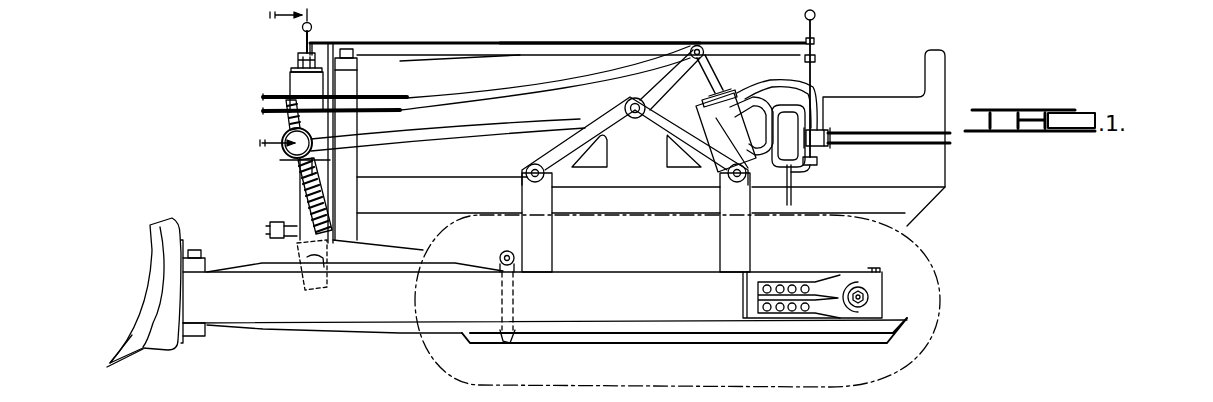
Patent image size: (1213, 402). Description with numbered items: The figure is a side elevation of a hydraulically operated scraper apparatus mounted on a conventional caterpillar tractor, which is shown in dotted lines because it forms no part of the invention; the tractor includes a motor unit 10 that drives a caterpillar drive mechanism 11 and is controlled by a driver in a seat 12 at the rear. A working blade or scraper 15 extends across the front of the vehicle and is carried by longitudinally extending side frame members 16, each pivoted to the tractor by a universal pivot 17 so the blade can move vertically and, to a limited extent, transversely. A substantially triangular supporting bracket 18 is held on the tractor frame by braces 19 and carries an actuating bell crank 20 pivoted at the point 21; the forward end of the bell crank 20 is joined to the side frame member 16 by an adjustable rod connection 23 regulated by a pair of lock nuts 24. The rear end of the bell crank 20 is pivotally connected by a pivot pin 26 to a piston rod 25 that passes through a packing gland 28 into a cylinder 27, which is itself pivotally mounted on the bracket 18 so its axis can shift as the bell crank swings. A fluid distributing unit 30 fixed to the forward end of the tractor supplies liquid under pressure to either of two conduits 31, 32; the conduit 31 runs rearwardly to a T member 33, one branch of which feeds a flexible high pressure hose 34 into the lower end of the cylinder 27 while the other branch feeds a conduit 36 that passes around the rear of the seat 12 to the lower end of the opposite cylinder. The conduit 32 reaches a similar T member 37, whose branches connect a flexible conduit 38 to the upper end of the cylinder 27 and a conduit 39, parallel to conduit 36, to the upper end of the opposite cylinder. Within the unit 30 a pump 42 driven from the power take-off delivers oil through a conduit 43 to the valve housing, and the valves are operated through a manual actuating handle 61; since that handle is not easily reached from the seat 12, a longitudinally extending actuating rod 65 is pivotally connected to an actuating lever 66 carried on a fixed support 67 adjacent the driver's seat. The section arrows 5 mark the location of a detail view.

The section arrow / lift arm cross-section 5 is at (298, 79).
The motor unit 10 is at (440, 67).
The caterpillar drive mechanism 11 is at (943, 251).
The seat 12 is at (877, 93).
The working blade or scraper 15 is at (143, 347).
The side frame members 16 is at (300, 316).
The universal pivot 17 is at (883, 297).
The triangular supporting bracket 18 is at (633, 177).
The braces 19 is at (543, 247).
The actuating bell crank 20 is at (505, 98).
The pivot point 21 is at (635, 118).
The adjustable rod connection 23 is at (295, 177).
The lock nuts 24 is at (282, 115).
The piston rod 25 is at (703, 77).
The pivot pin 26 is at (695, 47).
The cylinder 27 is at (737, 110).
The packing gland 28 is at (727, 120).
The fluid distributing unit 30 is at (288, 77).
The conduit 31 is at (333, 110).
The conduit 32 is at (360, 98).
The T member 33 is at (817, 157).
The flexible high pressure hose 34 is at (790, 190).
The conduit 36 is at (882, 147).
The T member 37 is at (822, 131).
The flexible conduit 38 is at (813, 83).
The conduit 39 is at (883, 132).
The pump 42 is at (280, 231).
The conduit 43 is at (290, 198).
The manual actuating handle 61 is at (311, 26).
The actuating rod 65 is at (532, 43).
The actuating lever 66 is at (815, 22).
The fixed support 67 is at (813, 60).